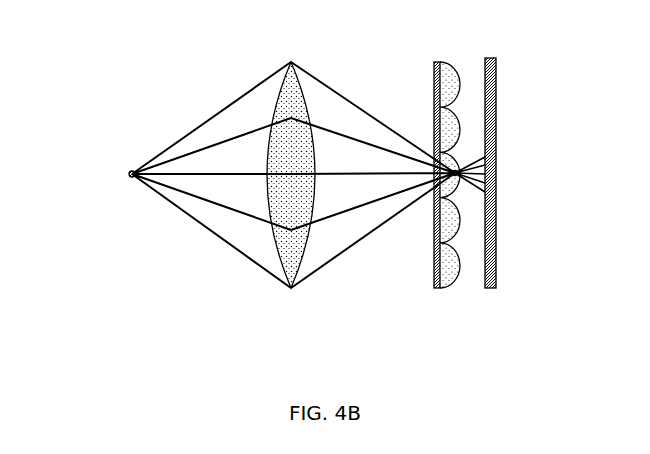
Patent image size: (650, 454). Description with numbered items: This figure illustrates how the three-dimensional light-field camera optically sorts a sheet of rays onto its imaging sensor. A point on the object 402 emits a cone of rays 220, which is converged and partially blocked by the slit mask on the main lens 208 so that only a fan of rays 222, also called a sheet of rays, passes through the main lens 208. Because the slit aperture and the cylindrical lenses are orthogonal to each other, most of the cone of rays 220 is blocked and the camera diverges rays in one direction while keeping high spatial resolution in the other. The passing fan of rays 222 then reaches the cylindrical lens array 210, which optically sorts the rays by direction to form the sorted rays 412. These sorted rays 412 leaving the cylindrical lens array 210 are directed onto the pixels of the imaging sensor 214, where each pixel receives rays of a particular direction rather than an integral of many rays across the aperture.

The object 402 is at (128, 178).
The cone of rays 220 is at (199, 112).
The fan of rays 222 is at (346, 100).
The main lens 208 is at (292, 288).
The cylindrical lens array 210 is at (446, 298).
The sorted rays 412 is at (463, 165).
The imaging sensor 214 is at (496, 240).